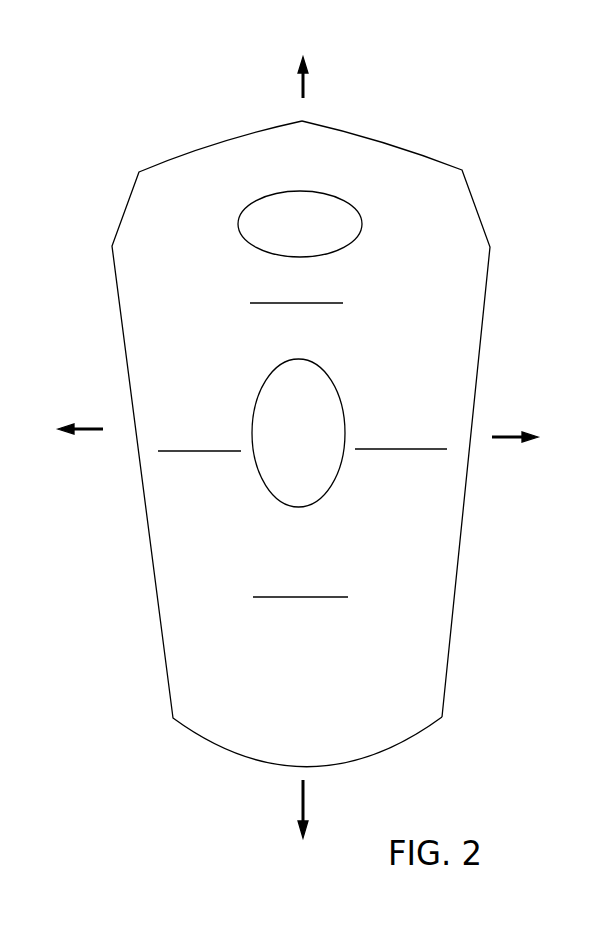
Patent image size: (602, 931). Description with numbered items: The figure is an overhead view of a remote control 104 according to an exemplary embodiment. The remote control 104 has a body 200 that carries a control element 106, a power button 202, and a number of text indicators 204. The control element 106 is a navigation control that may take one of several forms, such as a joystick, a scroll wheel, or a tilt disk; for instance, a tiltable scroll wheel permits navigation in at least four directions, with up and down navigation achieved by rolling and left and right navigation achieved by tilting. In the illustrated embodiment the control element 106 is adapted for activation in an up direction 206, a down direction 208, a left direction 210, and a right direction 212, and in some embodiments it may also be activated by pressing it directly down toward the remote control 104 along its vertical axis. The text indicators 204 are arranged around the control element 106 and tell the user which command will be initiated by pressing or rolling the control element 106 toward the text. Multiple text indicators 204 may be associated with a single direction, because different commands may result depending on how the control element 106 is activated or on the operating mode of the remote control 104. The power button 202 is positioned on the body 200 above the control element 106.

The body 200 is at (122, 213).
The remote control 104 is at (452, 160).
The power button 202 is at (315, 187).
The text indicators 204 is at (340, 292).
The control element 106 is at (330, 375).
The up direction 206 is at (300, 77).
The down direction 208 is at (302, 813).
The left direction 210 is at (92, 425).
The right direction 212 is at (502, 437).